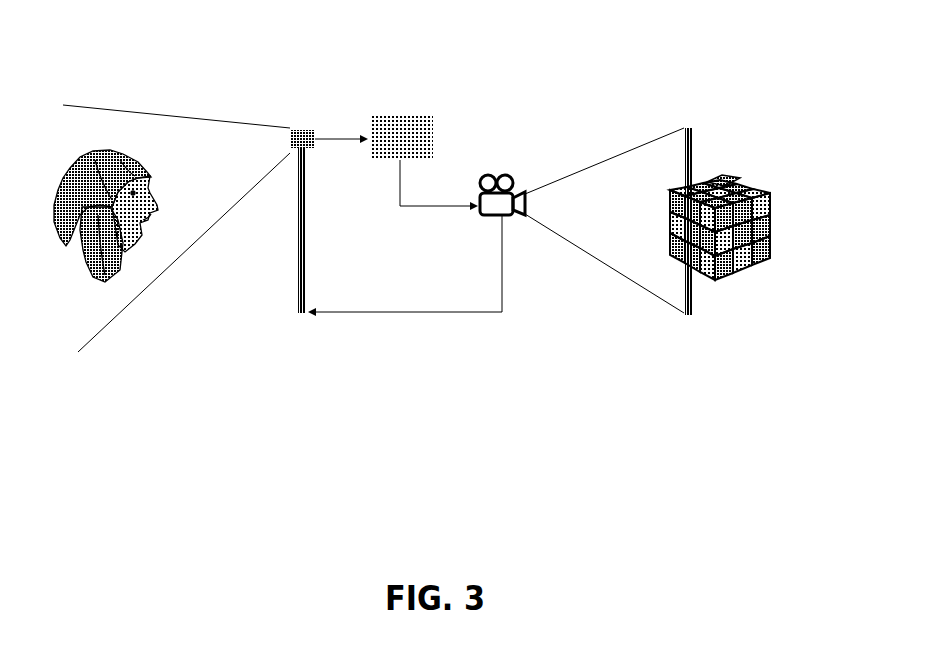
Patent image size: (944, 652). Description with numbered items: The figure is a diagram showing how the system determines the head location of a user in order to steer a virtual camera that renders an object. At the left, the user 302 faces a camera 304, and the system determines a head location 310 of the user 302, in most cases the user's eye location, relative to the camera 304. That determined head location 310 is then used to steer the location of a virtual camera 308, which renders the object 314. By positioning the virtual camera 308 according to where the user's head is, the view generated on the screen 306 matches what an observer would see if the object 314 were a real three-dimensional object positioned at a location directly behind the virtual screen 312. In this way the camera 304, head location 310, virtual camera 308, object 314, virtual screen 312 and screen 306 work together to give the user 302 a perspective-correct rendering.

The user 302 is at (72, 155).
The camera 304 is at (297, 132).
The screen 306 is at (297, 293).
The virtual camera 308 is at (523, 177).
The head location 310 is at (413, 113).
The virtual screen 312 is at (690, 128).
The object 314 is at (738, 183).